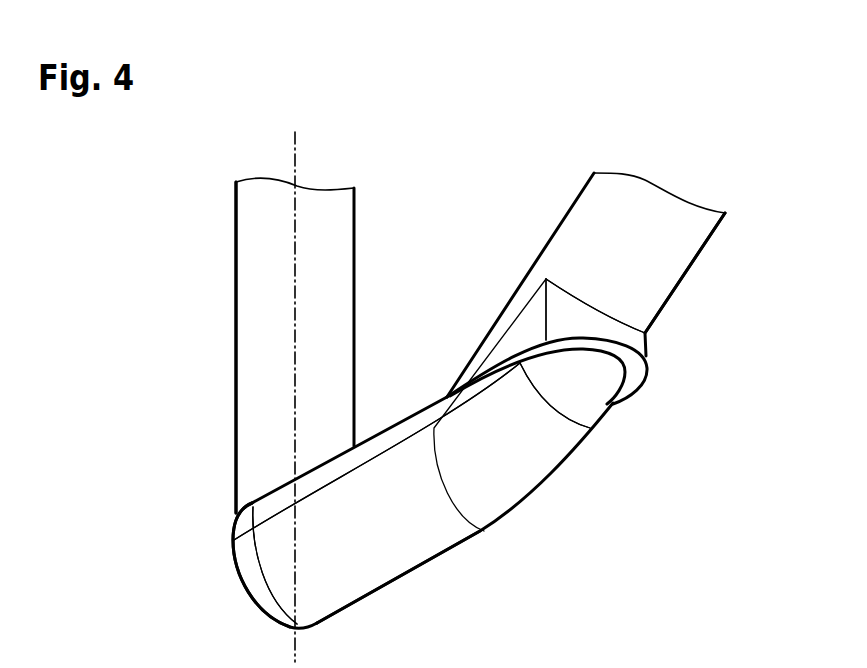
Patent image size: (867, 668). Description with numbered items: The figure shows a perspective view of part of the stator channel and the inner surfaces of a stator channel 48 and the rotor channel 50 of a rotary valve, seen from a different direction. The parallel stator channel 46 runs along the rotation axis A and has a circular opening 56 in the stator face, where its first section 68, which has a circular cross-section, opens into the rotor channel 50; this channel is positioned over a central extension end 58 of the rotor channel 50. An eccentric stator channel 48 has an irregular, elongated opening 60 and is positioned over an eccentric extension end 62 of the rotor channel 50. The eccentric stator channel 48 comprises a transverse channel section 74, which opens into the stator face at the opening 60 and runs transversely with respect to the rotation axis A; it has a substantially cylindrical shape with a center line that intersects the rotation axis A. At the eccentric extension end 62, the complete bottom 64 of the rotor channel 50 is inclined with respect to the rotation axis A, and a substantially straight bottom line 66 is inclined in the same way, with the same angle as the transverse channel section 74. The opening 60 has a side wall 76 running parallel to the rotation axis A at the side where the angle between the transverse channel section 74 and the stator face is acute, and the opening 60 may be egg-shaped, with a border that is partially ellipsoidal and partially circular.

The rotation axis A is at (296, 145).
The parallel stator channel 46 is at (200, 250).
The eccentric stator channel 48 is at (498, 192).
The rotor channel 50 is at (646, 527).
The circular opening 56 is at (200, 518).
The central extension end 58 is at (215, 580).
The elongated opening 60 is at (688, 328).
The eccentric extension end 62 is at (611, 453).
The bottom 64 is at (450, 575).
The bottom line 66 is at (510, 492).
The first section 68 is at (234, 317).
The transverse channel section 74 is at (682, 238).
The side wall 76 is at (637, 345).